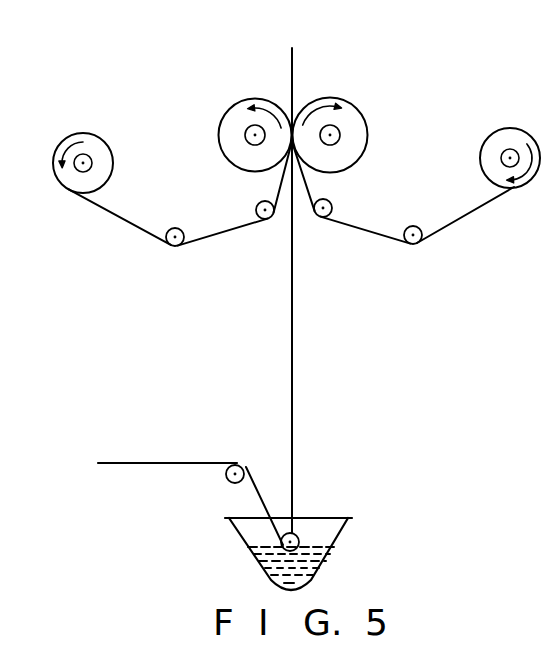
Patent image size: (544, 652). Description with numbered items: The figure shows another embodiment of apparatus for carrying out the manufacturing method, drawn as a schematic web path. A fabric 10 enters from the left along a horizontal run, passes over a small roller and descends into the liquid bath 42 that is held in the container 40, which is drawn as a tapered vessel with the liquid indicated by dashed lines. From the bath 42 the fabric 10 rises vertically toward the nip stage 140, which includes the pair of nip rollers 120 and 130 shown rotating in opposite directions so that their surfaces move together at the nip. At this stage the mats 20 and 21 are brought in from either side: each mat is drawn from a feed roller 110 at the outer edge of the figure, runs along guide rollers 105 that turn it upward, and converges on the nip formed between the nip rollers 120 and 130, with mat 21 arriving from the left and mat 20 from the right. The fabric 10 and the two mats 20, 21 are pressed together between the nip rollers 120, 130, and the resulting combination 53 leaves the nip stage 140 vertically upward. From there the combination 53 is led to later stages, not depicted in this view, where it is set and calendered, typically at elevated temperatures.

The fabric 10 is at (183, 463).
The mat 20 is at (367, 232).
The mat 21 is at (207, 240).
The container 40 is at (248, 552).
The liquid bath 42 is at (330, 568).
The combination 53 is at (294, 68).
The guide roller 105 is at (333, 205).
The feed roller 110 is at (103, 150).
The nip roller 120 is at (216, 143).
The nip roller 130 is at (360, 131).
The nip stage 140 is at (290, 118).